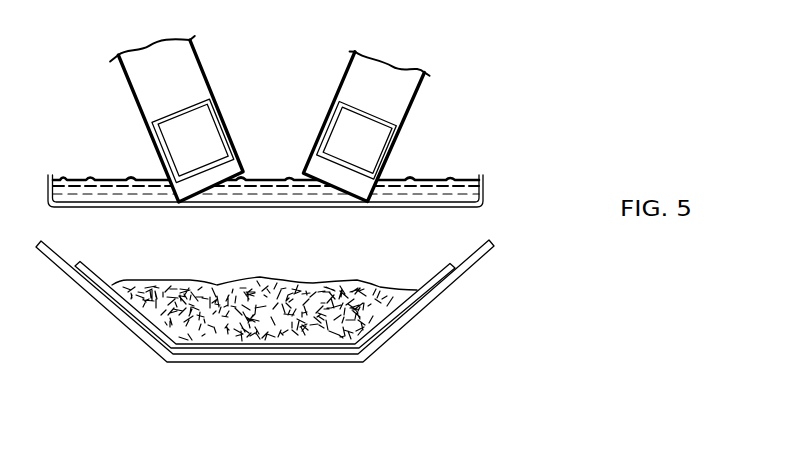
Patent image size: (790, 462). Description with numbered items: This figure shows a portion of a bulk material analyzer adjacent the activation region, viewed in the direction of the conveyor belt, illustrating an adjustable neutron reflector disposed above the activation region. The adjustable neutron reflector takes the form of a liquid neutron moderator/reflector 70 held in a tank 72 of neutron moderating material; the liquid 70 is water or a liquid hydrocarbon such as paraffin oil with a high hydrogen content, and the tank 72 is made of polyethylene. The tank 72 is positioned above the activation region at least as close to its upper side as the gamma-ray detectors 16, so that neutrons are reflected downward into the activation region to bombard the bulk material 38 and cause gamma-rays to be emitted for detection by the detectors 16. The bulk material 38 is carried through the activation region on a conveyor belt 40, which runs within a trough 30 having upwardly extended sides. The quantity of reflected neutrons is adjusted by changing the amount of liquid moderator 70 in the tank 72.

The gamma-ray detectors 16 is at (233, 138).
The liquid neutron moderator/reflector 70 is at (445, 177).
The tank 72 is at (487, 184).
The trough 30 is at (494, 256).
The conveyor belt 40 is at (95, 272).
The bulk material 38 is at (252, 283).